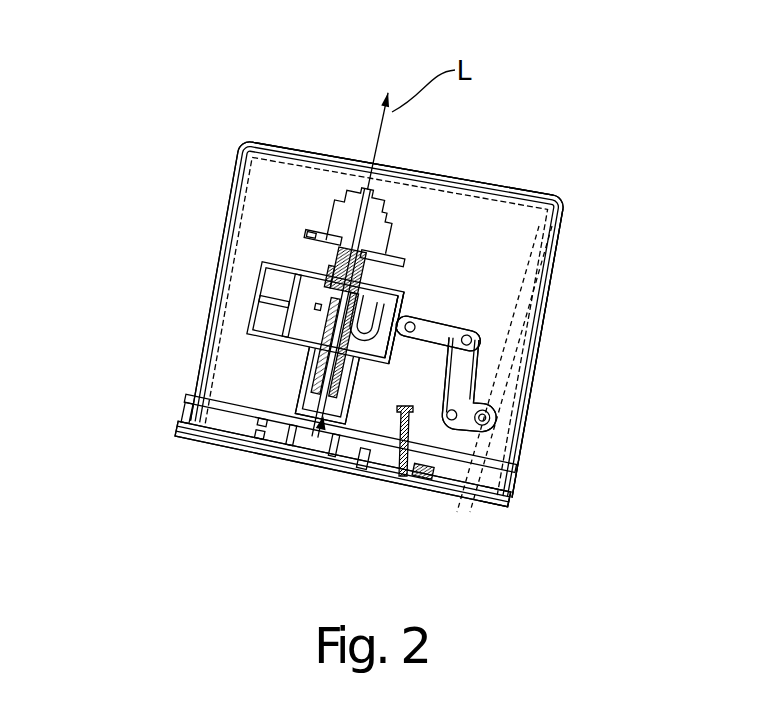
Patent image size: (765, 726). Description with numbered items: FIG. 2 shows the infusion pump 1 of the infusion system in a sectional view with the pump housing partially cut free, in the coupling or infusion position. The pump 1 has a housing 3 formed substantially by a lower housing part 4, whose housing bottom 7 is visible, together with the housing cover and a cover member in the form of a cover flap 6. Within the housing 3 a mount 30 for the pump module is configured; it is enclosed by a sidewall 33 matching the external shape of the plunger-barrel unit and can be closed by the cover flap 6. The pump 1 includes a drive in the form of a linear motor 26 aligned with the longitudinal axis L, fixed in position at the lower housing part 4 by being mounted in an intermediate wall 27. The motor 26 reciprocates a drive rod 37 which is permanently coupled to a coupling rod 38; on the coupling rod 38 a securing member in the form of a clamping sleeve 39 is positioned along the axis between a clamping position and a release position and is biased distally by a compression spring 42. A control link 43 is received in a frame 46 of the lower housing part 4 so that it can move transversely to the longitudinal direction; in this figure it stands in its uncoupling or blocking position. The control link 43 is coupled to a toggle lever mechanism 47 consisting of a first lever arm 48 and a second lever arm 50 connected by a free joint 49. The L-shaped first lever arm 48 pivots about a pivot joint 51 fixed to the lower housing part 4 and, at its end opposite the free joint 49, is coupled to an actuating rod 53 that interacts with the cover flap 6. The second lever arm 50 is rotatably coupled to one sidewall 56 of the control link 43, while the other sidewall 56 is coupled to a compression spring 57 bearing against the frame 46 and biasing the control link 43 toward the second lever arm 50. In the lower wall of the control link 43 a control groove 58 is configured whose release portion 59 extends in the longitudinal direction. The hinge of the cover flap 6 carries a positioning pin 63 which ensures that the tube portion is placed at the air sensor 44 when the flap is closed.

The infusion pump 1 is at (608, 101).
The housing 3 is at (233, 128).
The lower housing part 4 is at (534, 243).
The cover flap 6 is at (268, 457).
The housing bottom 7 is at (480, 276).
The linear motor 26 is at (380, 214).
The intermediate wall 27 is at (330, 238).
The mount 30 is at (327, 442).
The sidewall 33 is at (305, 379).
The drive rod 37 is at (388, 298).
The coupling rod 38 is at (318, 350).
The clamping sleeve 39 is at (340, 440).
The compression spring 42 is at (325, 262).
The control link 43 is at (511, 192).
The air sensor 44 is at (411, 462).
The frame 46 is at (313, 260).
The toggle lever mechanism 47 is at (502, 341).
The first lever arm 48 is at (456, 417).
The free joint 49 is at (472, 350).
The second lever arm 50 is at (445, 330).
The pivot joint 51 is at (494, 428).
The actuating rod 53 is at (503, 494).
The sidewall 56 is at (312, 281).
The compression spring 57 is at (303, 292).
The control groove 58 is at (407, 312).
The release portion 59 is at (492, 245).
The positioning pin 63 is at (390, 460).